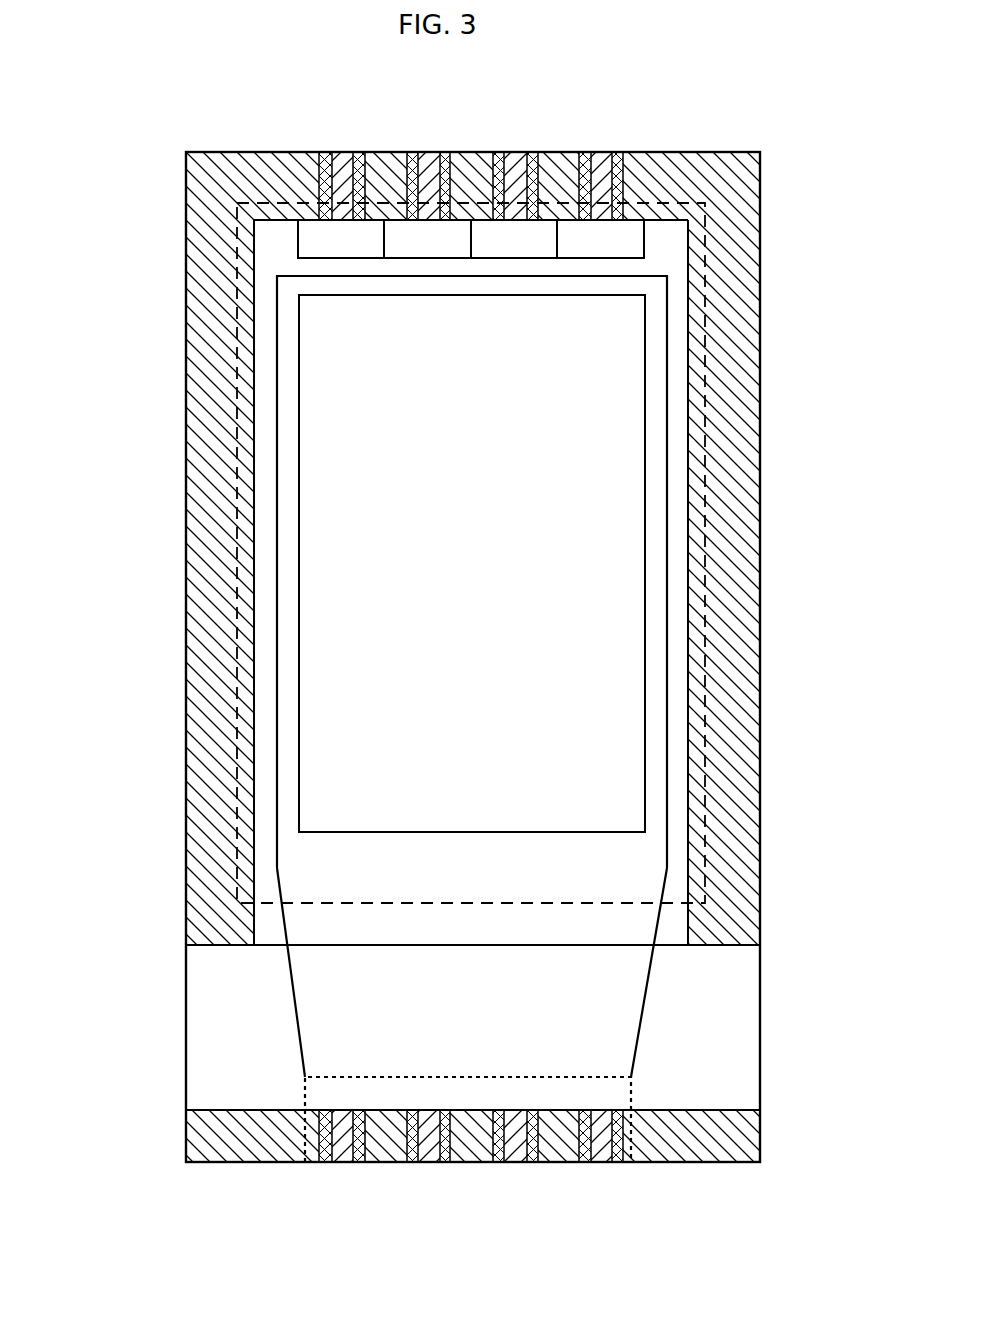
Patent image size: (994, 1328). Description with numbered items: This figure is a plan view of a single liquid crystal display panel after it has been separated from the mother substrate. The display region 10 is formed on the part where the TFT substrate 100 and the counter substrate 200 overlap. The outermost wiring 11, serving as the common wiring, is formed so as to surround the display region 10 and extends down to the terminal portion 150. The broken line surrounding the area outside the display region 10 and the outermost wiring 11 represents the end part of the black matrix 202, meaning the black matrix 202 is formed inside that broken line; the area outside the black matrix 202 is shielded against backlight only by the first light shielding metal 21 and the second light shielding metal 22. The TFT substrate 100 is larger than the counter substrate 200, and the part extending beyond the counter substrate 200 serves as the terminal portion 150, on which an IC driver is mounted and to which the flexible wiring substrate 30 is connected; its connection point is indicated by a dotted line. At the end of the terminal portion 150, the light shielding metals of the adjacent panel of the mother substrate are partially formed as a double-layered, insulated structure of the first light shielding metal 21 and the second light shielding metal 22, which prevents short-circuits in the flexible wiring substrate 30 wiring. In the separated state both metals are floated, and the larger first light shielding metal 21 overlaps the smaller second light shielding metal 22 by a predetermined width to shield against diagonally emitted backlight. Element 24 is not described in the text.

The display region 10 is at (378, 408).
The outermost wiring 11 is at (277, 542).
The first light shielding metal 21 is at (722, 425).
The second light shielding metal 22 is at (607, 152).
The light source 24 is at (298, 240).
The flexible wiring substrate 30 is at (631, 1095).
The TFT substrate 100 is at (186, 978).
The terminal portion 150 is at (224, 1043).
The counter substrate 200 is at (186, 188).
The black matrix 202 is at (705, 700).